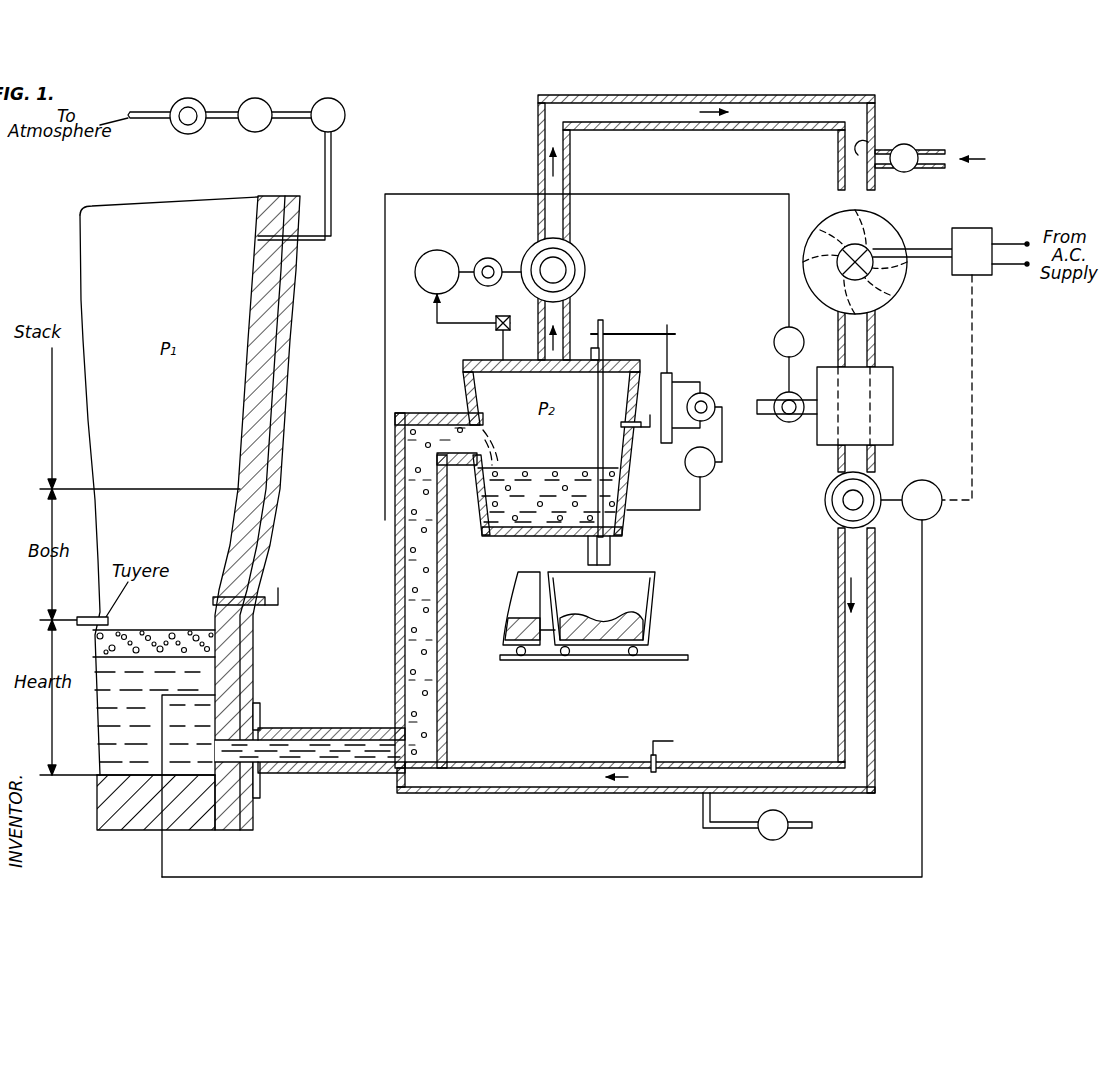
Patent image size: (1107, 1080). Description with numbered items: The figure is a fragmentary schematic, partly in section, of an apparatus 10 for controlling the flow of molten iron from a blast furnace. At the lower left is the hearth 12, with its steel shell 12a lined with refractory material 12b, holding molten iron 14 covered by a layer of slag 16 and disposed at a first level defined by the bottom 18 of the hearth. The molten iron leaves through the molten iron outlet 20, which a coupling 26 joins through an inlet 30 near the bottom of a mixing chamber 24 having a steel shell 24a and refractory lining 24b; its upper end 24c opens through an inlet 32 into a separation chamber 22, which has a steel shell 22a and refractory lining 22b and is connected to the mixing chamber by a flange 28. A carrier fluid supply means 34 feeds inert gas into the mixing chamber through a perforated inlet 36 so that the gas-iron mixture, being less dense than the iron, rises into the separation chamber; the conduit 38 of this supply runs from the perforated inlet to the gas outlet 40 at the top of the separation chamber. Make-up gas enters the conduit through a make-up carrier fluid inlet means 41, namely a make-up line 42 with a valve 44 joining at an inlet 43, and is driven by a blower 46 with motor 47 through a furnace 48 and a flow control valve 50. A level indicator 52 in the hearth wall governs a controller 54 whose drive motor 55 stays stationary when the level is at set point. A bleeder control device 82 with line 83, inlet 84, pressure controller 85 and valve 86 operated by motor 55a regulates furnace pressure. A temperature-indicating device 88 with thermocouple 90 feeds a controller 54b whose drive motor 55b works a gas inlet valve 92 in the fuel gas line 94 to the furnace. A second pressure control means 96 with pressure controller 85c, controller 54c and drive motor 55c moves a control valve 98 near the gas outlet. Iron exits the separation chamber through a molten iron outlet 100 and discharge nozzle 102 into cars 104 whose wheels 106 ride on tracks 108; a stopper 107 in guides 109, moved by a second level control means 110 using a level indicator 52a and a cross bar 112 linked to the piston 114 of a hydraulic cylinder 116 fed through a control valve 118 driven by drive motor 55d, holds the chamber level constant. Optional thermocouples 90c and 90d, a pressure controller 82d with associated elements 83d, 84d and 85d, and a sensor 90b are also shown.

The apparatus for controlling the flow of a fluid material 10 is at (441, 140).
The hearth 12 is at (262, 690).
The steel shell 12a is at (250, 656).
The refractory heat and corrosion resistant material 12b is at (216, 683).
The molten iron 14 is at (155, 774).
The layer of slag 16 is at (133, 630).
The bottom of the hearth 18 is at (133, 830).
The molten iron outlet 20 is at (254, 803).
The separation chamber 22 is at (628, 500).
The steel shell 22a is at (624, 485).
The refractory material 22b is at (472, 388).
The mixing chamber 24 is at (447, 575).
The steel shell 24a is at (398, 578).
The refractory material 24b is at (406, 604).
The upper end of the mixing chamber 24c is at (405, 412).
The coupling 26 is at (296, 728).
The flange 28 is at (464, 410).
The inlet 30 is at (398, 752).
The inlet 32 is at (480, 437).
The carrier fluid supply means 34 is at (637, 797).
The perforated inlet 36 is at (425, 771).
The conduit 38 is at (701, 762).
The gas outlet 40 is at (554, 374).
The make-up carrier fluid inlet means 41 is at (908, 146).
The make-up line 42 is at (943, 168).
The inlet 43 is at (868, 148).
The valve 44 is at (907, 172).
The blower 46 is at (876, 302).
The motor 47 is at (868, 268).
The furnace 48 is at (894, 391).
The flow control valve 50 is at (830, 513).
The level indicator 52 is at (216, 667).
The level indicator 52a is at (622, 516).
The controller 54 is at (934, 519).
The controller 54b is at (777, 332).
The controller 54c is at (488, 287).
The drive motor 55 is at (862, 493).
The motor 55a is at (178, 107).
The drive motor 55b is at (790, 423).
The drive motor 55c is at (566, 262).
The drive motor 55d is at (709, 398).
The bleeder control device 82 is at (334, 159).
The pressure controller 82d is at (726, 834).
The line 83 is at (333, 209).
The vent pipe riser 83d is at (710, 812).
The inlet 84 is at (258, 238).
The vent connection 84d is at (712, 790).
The pressure controller 85 is at (342, 121).
The pressure controller 85c is at (437, 251).
The vent valve 85d is at (768, 838).
The valve 86 is at (187, 134).
The temperature-indicating device 88 is at (382, 427).
The thermocouple 90 is at (394, 546).
The sensor flange 90b is at (256, 606).
The thermocouple 90c is at (636, 436).
The thermocouple 90d is at (651, 757).
The gas inlet valve 92 is at (779, 420).
The gas line 94 is at (756, 407).
The second pressure control means 96 is at (491, 257).
The control valve 98 is at (586, 270).
The molten iron outlet 100 is at (611, 550).
The discharge nozzle 102 is at (588, 556).
The cars 104 is at (652, 606).
The wheels 106 is at (567, 656).
The stopper 107 is at (598, 437).
The tracks 108 is at (664, 661).
The guides 109 is at (603, 351).
The second level control means 110 is at (671, 322).
The cross bar 112 is at (626, 333).
The piston 114 is at (673, 350).
The hydraulic cylinder 116 is at (671, 478).
The control valve 118 is at (722, 406).